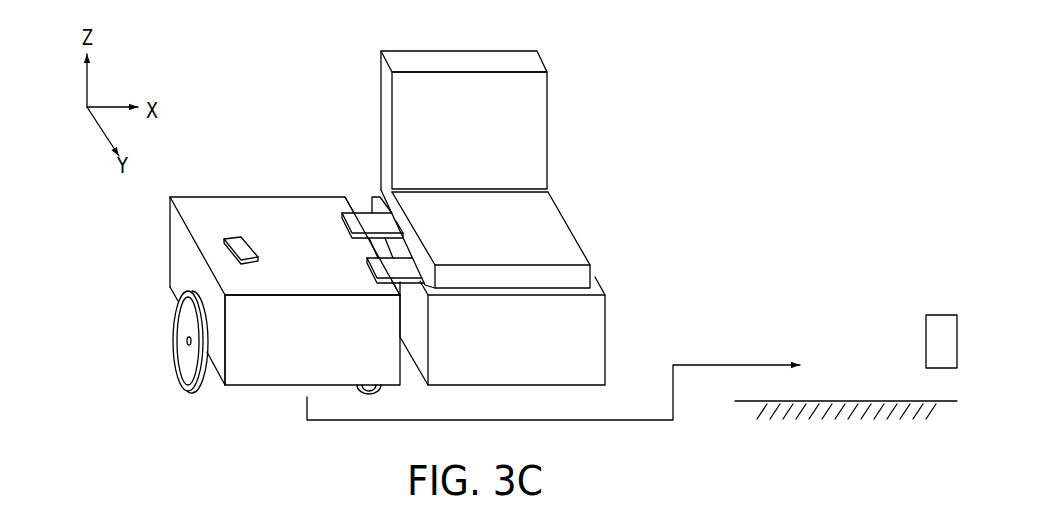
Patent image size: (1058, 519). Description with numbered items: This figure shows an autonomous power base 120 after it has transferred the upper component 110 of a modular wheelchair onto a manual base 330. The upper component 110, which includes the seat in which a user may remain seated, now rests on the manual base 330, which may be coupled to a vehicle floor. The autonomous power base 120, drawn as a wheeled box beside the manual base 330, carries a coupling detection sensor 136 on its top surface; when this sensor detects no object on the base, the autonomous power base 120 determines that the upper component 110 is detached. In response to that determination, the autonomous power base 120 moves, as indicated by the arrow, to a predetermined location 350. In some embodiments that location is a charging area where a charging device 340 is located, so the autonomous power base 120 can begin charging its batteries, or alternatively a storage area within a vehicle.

The upper component 110 is at (557, 98).
The autonomous power base 120 is at (151, 254).
The coupling detection sensor 136 is at (232, 236).
The manual base 330 is at (614, 324).
The charging device 340 is at (940, 315).
The predetermined location 350 is at (857, 337).